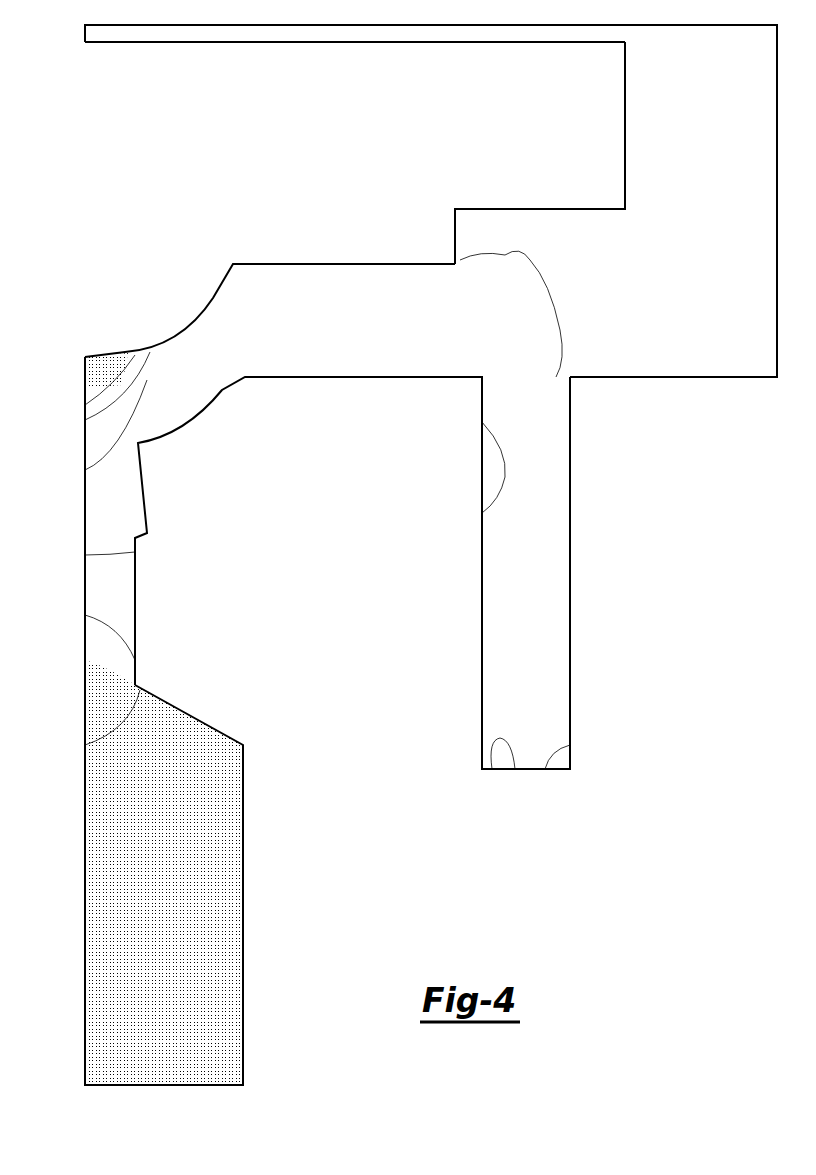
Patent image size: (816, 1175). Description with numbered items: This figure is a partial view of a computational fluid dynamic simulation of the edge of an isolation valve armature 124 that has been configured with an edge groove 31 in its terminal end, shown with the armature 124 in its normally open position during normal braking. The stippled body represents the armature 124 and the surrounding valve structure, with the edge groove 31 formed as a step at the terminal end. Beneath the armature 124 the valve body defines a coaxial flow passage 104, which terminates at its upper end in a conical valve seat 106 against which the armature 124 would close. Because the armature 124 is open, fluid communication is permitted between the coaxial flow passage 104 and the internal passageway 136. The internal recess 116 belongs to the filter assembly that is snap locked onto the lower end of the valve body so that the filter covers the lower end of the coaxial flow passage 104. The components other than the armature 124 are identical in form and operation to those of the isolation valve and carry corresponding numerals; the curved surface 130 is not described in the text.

The armature 124 is at (454, 156).
The edge groove 31 is at (535, 209).
The arcuate surface 130 is at (198, 317).
The conical valve seat 106 is at (189, 442).
The internal passageway 136 is at (552, 563).
The coaxial flow passage 104 is at (132, 813).
The internal recess 116 is at (356, 794).